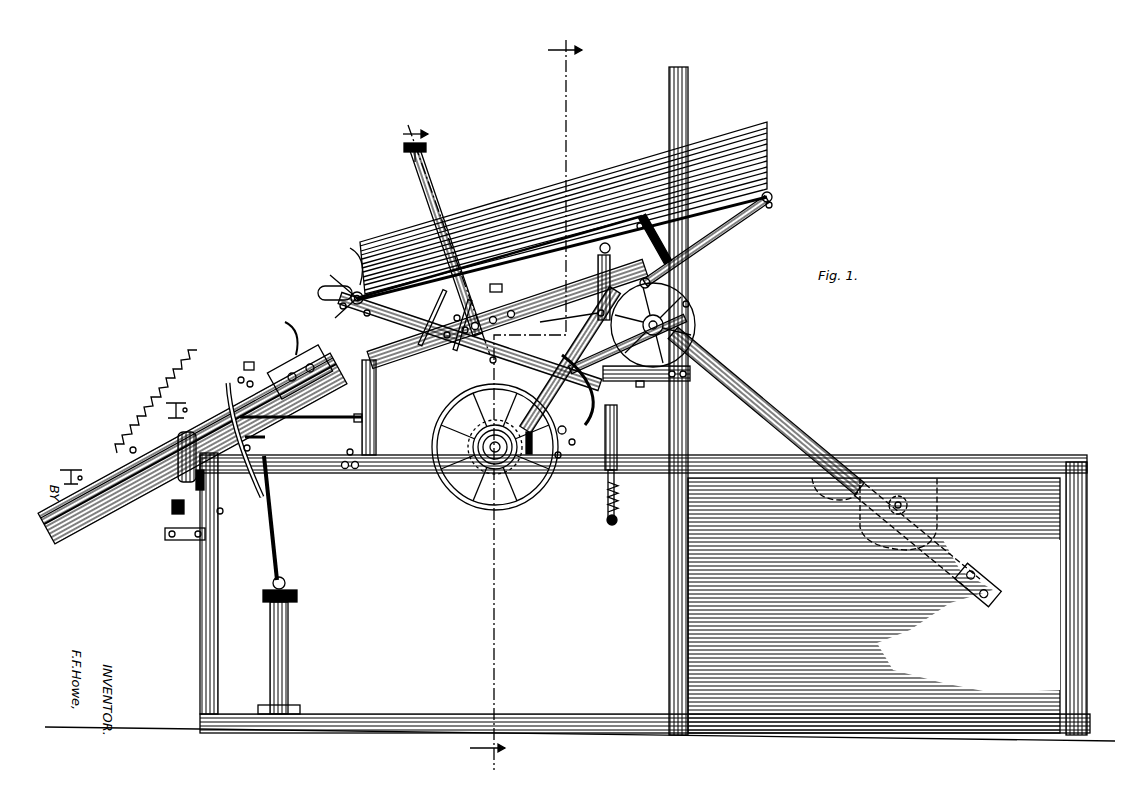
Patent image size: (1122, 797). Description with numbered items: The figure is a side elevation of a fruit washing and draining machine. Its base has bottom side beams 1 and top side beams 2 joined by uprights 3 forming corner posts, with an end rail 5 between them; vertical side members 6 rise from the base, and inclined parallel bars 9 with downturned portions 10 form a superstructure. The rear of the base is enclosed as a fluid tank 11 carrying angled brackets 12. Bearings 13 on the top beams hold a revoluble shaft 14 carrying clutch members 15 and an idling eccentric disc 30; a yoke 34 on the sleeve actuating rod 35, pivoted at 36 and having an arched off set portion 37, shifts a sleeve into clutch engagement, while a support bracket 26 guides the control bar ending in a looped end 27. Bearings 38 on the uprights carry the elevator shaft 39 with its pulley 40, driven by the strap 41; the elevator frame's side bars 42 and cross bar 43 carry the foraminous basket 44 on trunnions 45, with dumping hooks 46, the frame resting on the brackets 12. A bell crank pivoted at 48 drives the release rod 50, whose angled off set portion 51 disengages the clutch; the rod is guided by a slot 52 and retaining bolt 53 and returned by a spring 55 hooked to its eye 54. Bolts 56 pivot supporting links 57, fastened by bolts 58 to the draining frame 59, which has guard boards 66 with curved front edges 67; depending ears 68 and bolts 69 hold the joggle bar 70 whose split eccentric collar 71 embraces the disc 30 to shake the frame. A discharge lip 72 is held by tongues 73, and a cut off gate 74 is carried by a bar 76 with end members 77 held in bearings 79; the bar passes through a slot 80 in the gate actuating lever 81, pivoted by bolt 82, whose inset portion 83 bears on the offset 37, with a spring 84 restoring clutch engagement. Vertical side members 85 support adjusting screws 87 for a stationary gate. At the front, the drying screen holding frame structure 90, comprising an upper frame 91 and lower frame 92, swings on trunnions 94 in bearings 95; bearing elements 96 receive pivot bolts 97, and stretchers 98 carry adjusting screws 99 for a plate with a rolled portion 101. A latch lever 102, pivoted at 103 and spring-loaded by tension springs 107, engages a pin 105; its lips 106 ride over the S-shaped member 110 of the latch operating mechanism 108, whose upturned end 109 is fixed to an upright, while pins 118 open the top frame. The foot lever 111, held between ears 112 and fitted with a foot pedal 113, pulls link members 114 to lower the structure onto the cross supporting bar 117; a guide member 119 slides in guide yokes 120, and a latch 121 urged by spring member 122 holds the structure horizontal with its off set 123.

The bottom side beams 1 is at (612, 736).
The top side beams 2 is at (330, 474).
The uprights 3 is at (200, 618).
The end rail 5 is at (526, 404).
The side members 6 is at (688, 118).
The parallel bars 9 is at (533, 310).
The downturned portions 10 is at (376, 422).
The fluid tank 11 is at (935, 705).
The angled bracket 12 is at (968, 598).
The bearings 13 is at (465, 466).
The revoluble shaft 14 is at (470, 485).
The clutch member 15 is at (480, 447).
The support bracket 26 is at (665, 382).
The looped end 27 is at (592, 343).
The eccentric disc 30 is at (472, 433).
The yoke 34 is at (470, 418).
The sleeve actuating rod 35 is at (564, 432).
The pivot 36 is at (696, 318).
The arched off set portion 37 is at (570, 400).
The bearings 38 is at (689, 303).
The elevator shaft 39 is at (647, 329).
The pulley 40 is at (598, 313).
The strap 41 is at (560, 345).
The side bars 42 is at (753, 397).
The cross bar 43 is at (600, 249).
The foraminous basket 44 is at (937, 515).
The end trunnions 45 is at (905, 492).
The dumping hooks 46 is at (840, 498).
The pivot 48 is at (600, 281).
The release rod 50 is at (617, 428).
The angled off set portion 51 is at (638, 384).
The slot 52 is at (617, 445).
The retaining bolt 53 is at (560, 458).
The eye 54 is at (652, 238).
The spring 55 is at (620, 496).
The bolts 56 is at (685, 257).
The supporting links 57 is at (463, 328).
The bolts 58 is at (638, 228).
The draining frame 59 is at (513, 212).
The guard boards 66 is at (588, 190).
The curved front edges 67 is at (347, 259).
The depending ears 68 is at (772, 194).
The bolts 69 is at (771, 206).
The joggle bar 70 is at (735, 222).
The split eccentric collar 71 is at (495, 362).
The discharge lip 72 is at (320, 294).
The tongues 73 is at (395, 312).
The cut off gate 74 is at (365, 315).
The bar 76 is at (340, 310).
The end members 77 is at (415, 285).
The bearings 79 is at (500, 287).
The slot 80 is at (352, 292).
The gate actuating lever 81 is at (422, 352).
The bolt 82 is at (458, 355).
The inset portion 83 is at (575, 440).
The spring 84 is at (535, 455).
The vertical side members 85 is at (437, 200).
The threaded adjusting screws 87 is at (428, 160).
The drying screen holding frame structure 90 is at (142, 500).
The upper frame 91 is at (125, 455).
The lower frame 92 is at (112, 505).
The trunnions 94 is at (218, 490).
The bearings 95 is at (178, 472).
The bearing element 96 is at (312, 355).
The pivot bolts 97 is at (298, 362).
The stretchers 98 is at (82, 476).
The adjusting screws 99 is at (70, 470).
The rolled portion 101 is at (288, 325).
The latch lever 102 is at (246, 362).
The pivot 103 is at (232, 375).
The pin 105 is at (276, 416).
The lips 106 is at (250, 381).
The tension springs 107 is at (150, 422).
The latch operating mechanism 108 is at (349, 449).
The upturned end 109 is at (356, 414).
The S-shaped member 110 is at (266, 437).
The foot lever 111 is at (290, 656).
The ears 112 is at (296, 703).
The foot pedal 113 is at (297, 595).
The link member 114 is at (280, 550).
The cross supporting bar 117 is at (352, 474).
The pins 118 is at (242, 377).
The guide member 119 is at (244, 448).
The guide yokes 120 is at (223, 513).
The latch 121 is at (170, 512).
The spring member 122 is at (180, 541).
The off set 123 is at (131, 448).